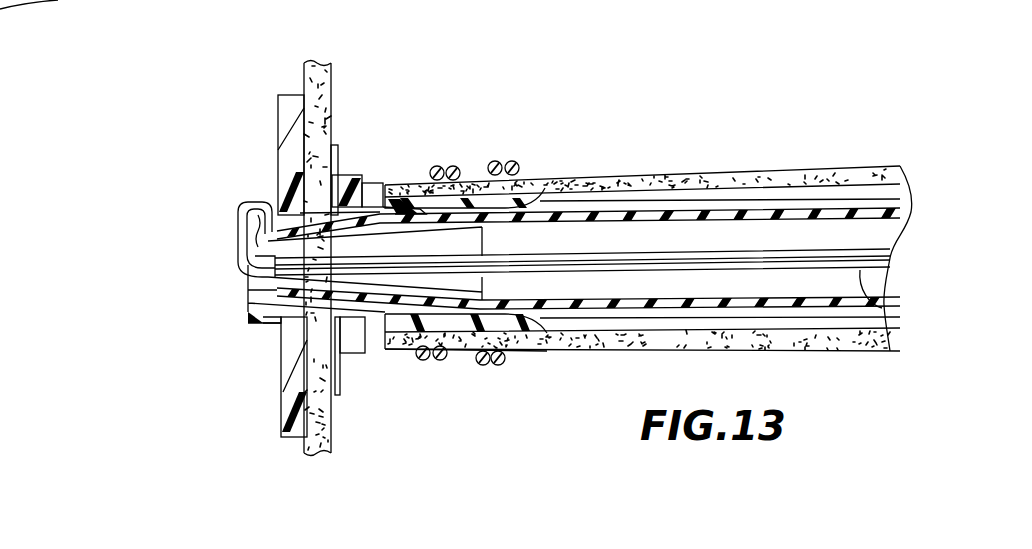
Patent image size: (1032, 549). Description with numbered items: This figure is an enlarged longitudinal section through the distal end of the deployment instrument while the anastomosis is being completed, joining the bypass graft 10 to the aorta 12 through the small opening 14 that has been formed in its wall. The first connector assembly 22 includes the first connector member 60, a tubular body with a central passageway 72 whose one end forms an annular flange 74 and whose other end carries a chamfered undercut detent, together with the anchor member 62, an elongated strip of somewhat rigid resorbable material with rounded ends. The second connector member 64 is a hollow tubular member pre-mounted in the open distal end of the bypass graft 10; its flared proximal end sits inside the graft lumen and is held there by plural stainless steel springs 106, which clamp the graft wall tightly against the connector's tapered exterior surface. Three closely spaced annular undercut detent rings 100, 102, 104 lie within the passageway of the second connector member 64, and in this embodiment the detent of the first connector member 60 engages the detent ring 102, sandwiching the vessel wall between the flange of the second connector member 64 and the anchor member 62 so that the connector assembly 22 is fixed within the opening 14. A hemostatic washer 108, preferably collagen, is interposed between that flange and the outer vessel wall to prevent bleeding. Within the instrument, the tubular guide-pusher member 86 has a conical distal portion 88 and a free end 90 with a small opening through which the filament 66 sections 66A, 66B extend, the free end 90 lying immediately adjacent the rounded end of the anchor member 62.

The bypass graft 10 is at (745, 155).
The aorta 12 is at (350, 420).
The opening 14 is at (278, 400).
The first connector assembly 22 is at (348, 165).
The first connector member 60 is at (248, 328).
The anchor member 62 is at (287, 397).
The second connector member 64 is at (550, 346).
The filament 66 is at (885, 235).
The filament section 66A is at (885, 310).
The filament section 66B is at (825, 247).
The central passageway 72 is at (258, 272).
The annular flange 74 is at (273, 327).
The guide-pusher member 86 is at (608, 220).
The conical distal portion end 88 is at (280, 208).
The free end 90 is at (282, 282).
The detent ring 100 is at (360, 207).
The detent ring 102 is at (412, 200).
The detent ring 104 is at (413, 195).
The springs 106 is at (445, 172).
The washer 108 is at (365, 372).